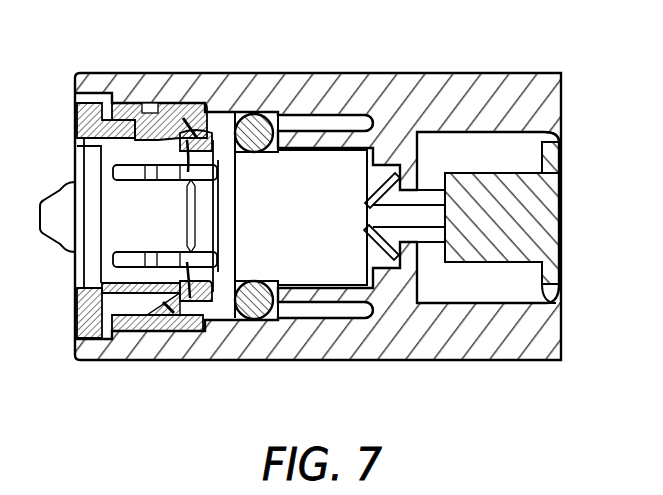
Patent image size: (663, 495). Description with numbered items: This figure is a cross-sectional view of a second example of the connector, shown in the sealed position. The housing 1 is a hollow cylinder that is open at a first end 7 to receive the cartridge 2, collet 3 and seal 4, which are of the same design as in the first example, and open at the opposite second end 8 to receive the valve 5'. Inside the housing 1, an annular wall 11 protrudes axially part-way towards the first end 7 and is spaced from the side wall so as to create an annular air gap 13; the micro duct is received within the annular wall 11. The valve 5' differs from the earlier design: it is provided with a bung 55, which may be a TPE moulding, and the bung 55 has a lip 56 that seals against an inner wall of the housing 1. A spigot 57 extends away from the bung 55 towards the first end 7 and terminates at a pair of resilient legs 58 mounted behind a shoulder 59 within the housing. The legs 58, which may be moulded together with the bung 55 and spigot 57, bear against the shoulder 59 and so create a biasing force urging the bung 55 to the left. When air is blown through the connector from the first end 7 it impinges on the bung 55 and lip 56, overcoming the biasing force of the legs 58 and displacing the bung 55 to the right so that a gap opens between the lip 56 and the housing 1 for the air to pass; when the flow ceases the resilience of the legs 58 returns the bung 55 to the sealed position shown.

The housing 1 is at (412, 90).
The cartridge 2 is at (179, 346).
The collet 3 is at (84, 315).
The seal 4 is at (251, 114).
The valve 5' is at (488, 109).
The first end 7 is at (58, 76).
The second end 8 is at (573, 350).
The annular wall 11 is at (333, 300).
The annular air gap 13 is at (291, 300).
The bung 55 is at (518, 216).
The lip 56 is at (557, 288).
The spigot 57 is at (427, 216).
The resilient legs 58 is at (375, 256).
The shoulder 59 is at (375, 188).